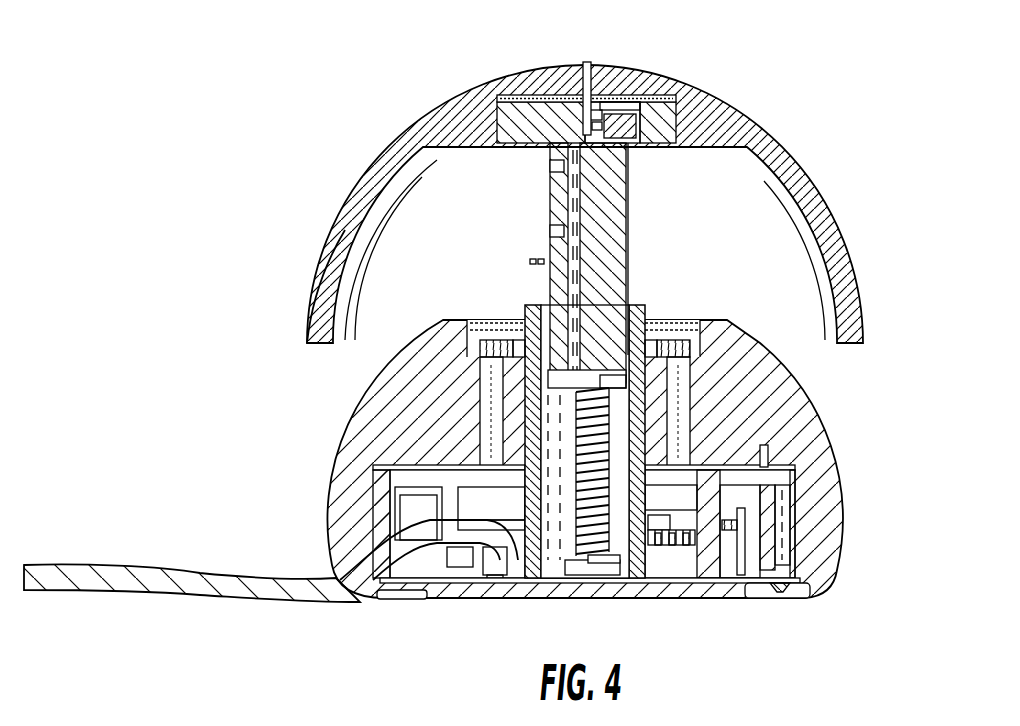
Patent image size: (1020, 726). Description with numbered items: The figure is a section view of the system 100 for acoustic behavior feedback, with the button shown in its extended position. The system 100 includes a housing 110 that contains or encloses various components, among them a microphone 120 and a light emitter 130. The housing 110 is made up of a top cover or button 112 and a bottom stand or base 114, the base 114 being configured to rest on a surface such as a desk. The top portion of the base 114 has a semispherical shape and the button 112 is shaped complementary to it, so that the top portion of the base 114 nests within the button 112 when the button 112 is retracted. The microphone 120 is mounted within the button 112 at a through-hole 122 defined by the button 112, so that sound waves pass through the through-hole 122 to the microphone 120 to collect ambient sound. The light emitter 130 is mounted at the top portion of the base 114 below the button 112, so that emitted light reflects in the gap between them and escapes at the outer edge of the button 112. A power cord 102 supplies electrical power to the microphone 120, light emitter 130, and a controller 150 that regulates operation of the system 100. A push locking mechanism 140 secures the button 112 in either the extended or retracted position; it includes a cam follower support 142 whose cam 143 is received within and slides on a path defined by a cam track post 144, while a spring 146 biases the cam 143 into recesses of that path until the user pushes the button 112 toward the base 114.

The system 100 is at (327, 66).
The power cord 102 is at (138, 573).
The housing 110 is at (760, 343).
The button 112 is at (321, 284).
The base 114 is at (346, 493).
The microphone 120 is at (617, 125).
The through-hole 122 is at (584, 52).
The light emitter 130 is at (677, 340).
The push locking mechanism 140 is at (532, 290).
The cam follower support 142 is at (533, 432).
The cam 143 is at (532, 345).
The cam track post 144 is at (606, 256).
The spring 146 is at (593, 522).
The controller 150 is at (668, 538).